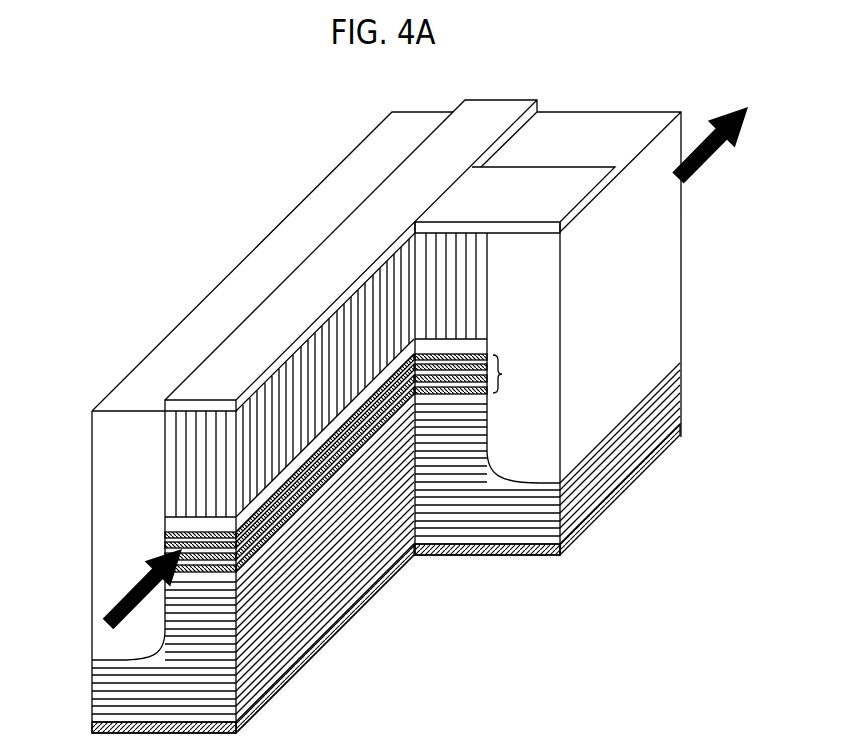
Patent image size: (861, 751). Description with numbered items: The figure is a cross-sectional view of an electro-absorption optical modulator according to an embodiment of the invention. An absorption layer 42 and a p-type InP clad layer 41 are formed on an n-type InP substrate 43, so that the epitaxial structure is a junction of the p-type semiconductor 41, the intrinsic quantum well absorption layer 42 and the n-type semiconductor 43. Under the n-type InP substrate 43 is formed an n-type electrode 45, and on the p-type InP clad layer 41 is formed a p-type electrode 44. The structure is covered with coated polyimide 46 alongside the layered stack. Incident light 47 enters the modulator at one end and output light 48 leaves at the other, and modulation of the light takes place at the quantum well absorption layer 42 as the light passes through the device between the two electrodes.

The p-type InP clad layer 41 is at (181, 456).
The absorption layer 42 is at (502, 374).
The n-type InP substrate 43 is at (320, 575).
The p-type electrode 44 is at (261, 332).
The n-type electrode 45 is at (247, 720).
The coated polyimide 46 is at (542, 283).
The incident light 47 is at (124, 583).
The output light 48 is at (728, 108).